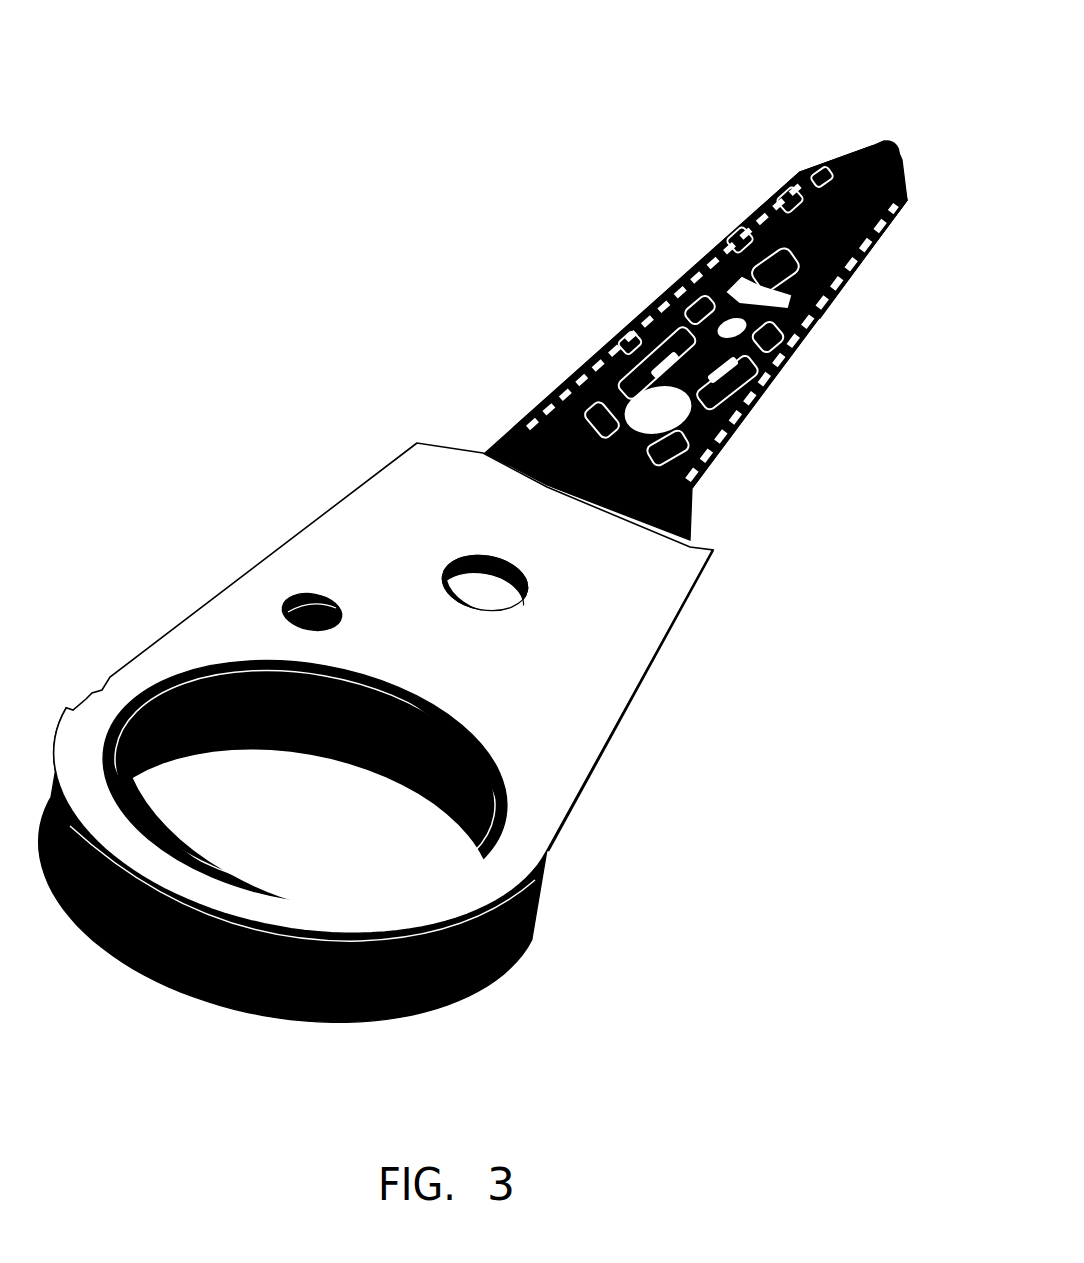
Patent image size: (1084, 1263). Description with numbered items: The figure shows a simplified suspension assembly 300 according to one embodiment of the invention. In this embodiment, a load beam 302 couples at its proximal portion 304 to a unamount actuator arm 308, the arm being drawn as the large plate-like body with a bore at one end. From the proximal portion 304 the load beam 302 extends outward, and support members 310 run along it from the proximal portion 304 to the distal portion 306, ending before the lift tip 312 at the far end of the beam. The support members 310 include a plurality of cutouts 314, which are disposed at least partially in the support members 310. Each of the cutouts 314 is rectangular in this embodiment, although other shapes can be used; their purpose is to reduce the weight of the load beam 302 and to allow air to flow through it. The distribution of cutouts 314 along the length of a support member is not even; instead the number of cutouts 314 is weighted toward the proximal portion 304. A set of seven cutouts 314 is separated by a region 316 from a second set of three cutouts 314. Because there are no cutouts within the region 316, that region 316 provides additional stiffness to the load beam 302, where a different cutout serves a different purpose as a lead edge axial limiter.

The suspension assembly 300 is at (483, 518).
The load beam 302 is at (677, 321).
The proximal portion 304 is at (392, 686).
The distal portion 306 is at (791, 225).
The unamount actuator arm 308 is at (392, 733).
The support members 310 is at (677, 356).
The lift tip 312 is at (819, 133).
The cutouts 314 is at (668, 261).
The region 316 is at (712, 330).